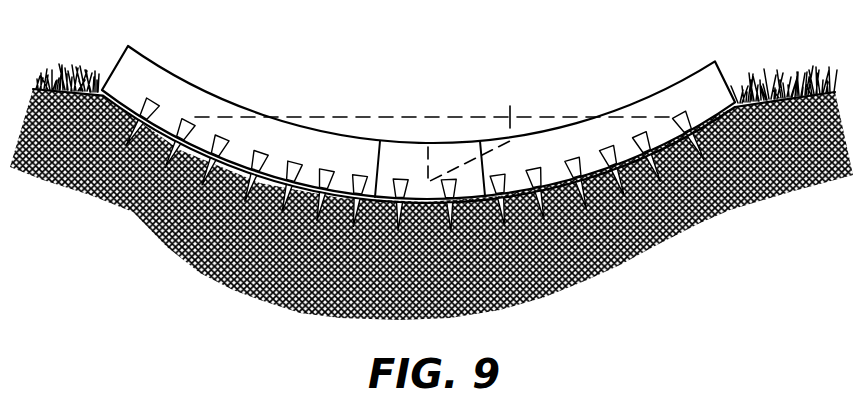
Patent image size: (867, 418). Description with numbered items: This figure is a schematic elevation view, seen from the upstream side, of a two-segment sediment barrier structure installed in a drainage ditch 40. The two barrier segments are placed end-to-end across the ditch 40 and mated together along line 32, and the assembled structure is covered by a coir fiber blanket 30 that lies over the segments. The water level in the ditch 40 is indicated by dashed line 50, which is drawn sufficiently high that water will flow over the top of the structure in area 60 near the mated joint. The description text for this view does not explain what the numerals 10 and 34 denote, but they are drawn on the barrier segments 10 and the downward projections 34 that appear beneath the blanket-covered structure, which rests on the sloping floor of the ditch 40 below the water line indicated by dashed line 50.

The mat section 10 is at (213, 95).
The coir fiber blanket 30 is at (402, 163).
The line 32 is at (511, 108).
The spikes 34 is at (207, 157).
The drainage ditch 40 is at (750, 62).
The dashed line 50 is at (357, 113).
The area 60 is at (443, 125).